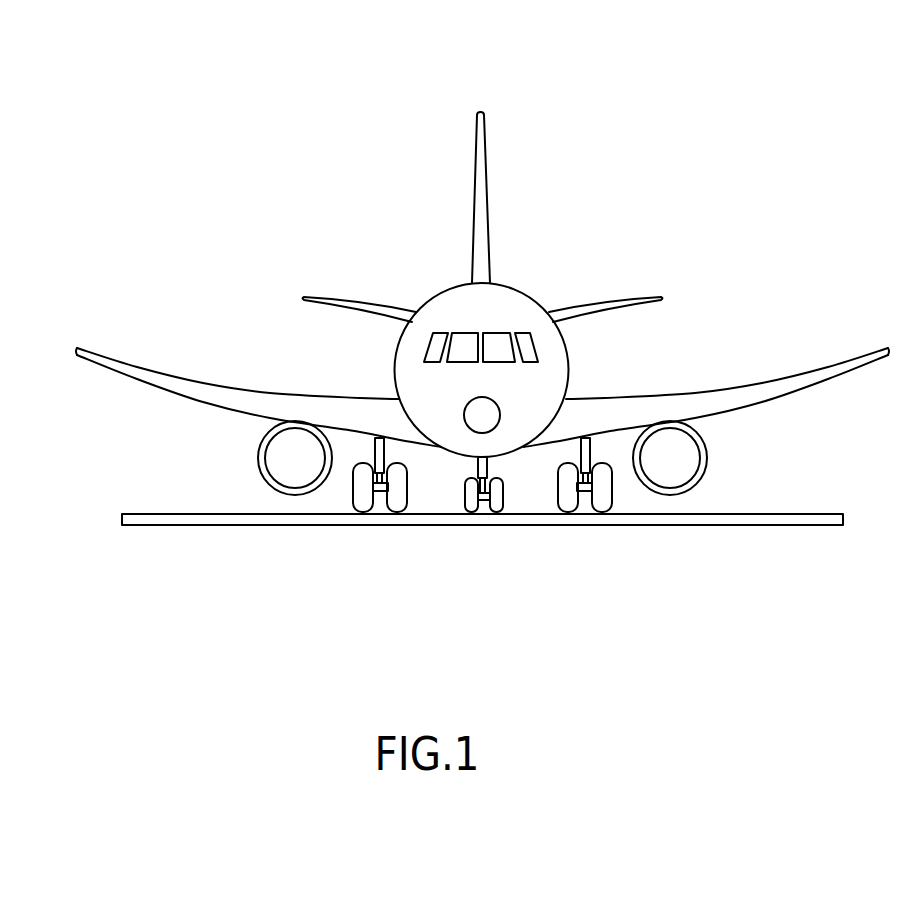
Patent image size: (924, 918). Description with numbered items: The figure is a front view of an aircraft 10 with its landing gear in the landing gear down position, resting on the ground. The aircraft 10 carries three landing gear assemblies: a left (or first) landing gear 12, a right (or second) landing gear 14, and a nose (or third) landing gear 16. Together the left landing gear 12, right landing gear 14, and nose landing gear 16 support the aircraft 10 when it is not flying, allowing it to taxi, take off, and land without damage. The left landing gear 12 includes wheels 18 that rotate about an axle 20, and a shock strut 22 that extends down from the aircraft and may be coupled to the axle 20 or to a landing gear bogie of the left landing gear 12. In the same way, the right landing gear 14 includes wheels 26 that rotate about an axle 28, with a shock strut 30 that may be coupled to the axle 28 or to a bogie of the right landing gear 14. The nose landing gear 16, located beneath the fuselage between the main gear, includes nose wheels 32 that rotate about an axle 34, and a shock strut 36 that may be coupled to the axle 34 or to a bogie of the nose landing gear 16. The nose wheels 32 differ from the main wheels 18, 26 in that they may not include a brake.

The aircraft 10 is at (328, 202).
The left landing gear 12 is at (663, 477).
The right landing gear 14 is at (304, 493).
The nose landing gear 16 is at (524, 491).
The wheels 18 is at (613, 508).
The axle 20 is at (585, 510).
The shock strut 22 is at (595, 443).
The wheels 26 is at (411, 510).
The axle 28 is at (380, 512).
The shock strut 30 is at (373, 447).
The wheels 32 is at (463, 512).
The axle 34 is at (482, 513).
The shock strut 36 is at (502, 470).